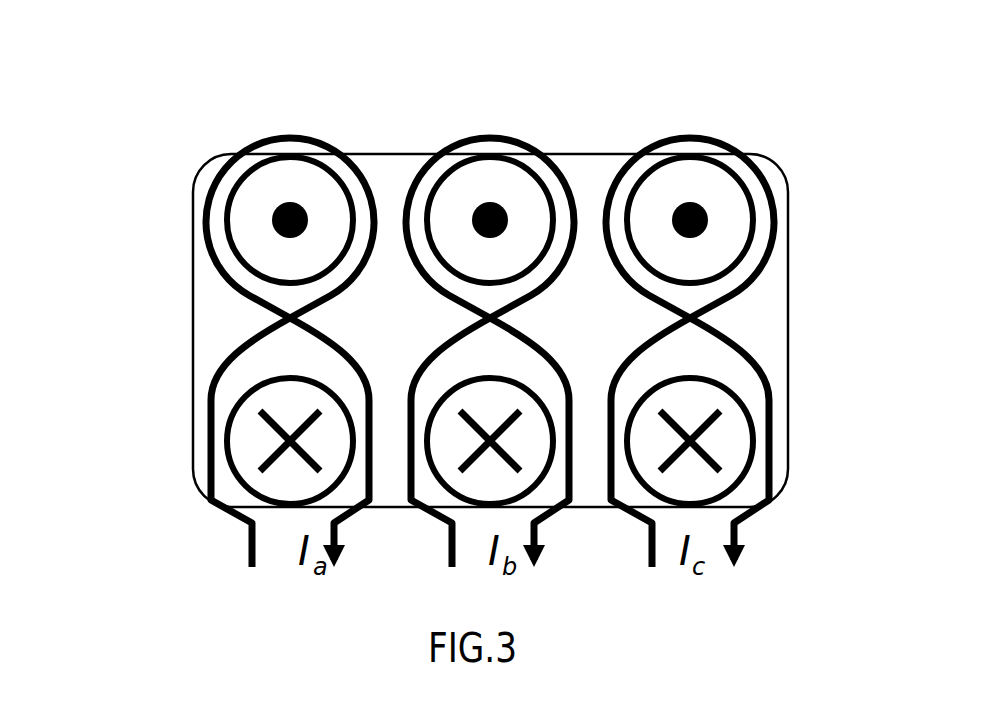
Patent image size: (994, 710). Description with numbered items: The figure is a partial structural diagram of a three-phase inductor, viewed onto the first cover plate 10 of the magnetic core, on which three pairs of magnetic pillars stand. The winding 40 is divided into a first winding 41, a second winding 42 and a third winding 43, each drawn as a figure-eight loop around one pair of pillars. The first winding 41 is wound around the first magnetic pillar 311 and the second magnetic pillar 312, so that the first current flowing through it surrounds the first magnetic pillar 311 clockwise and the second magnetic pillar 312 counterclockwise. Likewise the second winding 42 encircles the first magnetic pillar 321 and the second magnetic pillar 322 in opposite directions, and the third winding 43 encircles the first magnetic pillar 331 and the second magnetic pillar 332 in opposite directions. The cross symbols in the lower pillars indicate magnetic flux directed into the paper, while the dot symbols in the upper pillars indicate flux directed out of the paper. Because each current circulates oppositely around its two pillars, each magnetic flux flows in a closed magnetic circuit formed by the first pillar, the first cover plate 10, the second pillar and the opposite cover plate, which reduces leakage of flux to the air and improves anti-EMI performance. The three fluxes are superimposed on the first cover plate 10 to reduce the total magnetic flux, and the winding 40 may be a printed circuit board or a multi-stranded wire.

The first cover plate 10 is at (765, 300).
The winding 40 is at (442, 306).
The first winding 41 is at (253, 142).
The second winding 42 is at (605, 87).
The third winding 43 is at (673, 130).
The first magnetic pillar 311 is at (247, 443).
The second magnetic pillar 312 is at (257, 232).
The first magnetic pillar 321 is at (520, 447).
The second magnetic pillar 322 is at (460, 172).
The first magnetic pillar 331 is at (722, 446).
The second magnetic pillar 332 is at (710, 203).